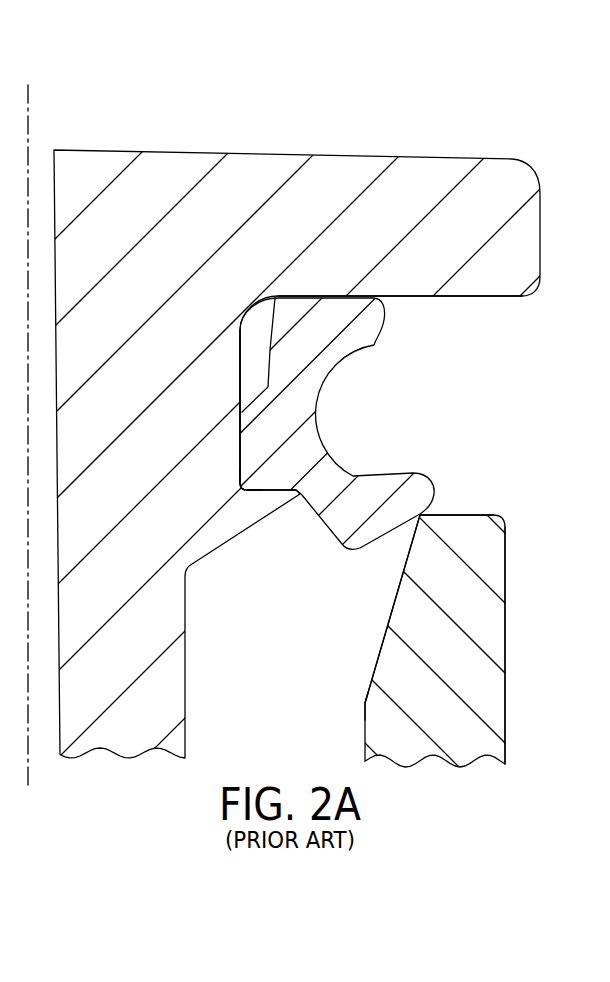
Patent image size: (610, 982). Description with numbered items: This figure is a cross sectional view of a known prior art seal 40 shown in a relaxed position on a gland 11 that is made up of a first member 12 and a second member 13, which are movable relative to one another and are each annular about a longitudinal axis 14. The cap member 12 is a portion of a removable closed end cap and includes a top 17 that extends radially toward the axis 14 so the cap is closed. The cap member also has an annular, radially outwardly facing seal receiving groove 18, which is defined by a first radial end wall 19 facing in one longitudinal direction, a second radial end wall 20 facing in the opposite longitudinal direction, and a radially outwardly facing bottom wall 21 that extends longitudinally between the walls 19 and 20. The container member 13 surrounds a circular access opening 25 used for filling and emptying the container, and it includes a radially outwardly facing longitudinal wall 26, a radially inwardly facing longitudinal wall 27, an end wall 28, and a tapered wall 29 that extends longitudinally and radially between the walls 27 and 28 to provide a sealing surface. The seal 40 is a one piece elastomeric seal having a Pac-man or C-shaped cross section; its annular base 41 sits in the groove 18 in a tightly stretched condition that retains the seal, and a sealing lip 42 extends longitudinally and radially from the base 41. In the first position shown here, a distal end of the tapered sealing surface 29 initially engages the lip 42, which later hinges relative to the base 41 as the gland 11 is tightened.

The gland 11 is at (192, 151).
The first member 12 is at (254, 194).
The second member 13 is at (474, 677).
The longitudinal axis 14 is at (30, 130).
The top 17 is at (421, 182).
The seal receiving groove 18 is at (267, 311).
The first radial end wall 19 is at (486, 298).
The second radial end wall 20 is at (272, 487).
The bottom wall 21 is at (241, 356).
The access opening 25 is at (287, 748).
The radially outwardly facing longitudinal wall 26 is at (505, 637).
The radially inwardly facing longitudinal wall 27 is at (365, 704).
The end wall 28 is at (468, 514).
The tapered wall 29 is at (383, 633).
The seal 40 is at (378, 346).
The annular base 41 is at (307, 366).
The sealing lip 42 is at (367, 511).